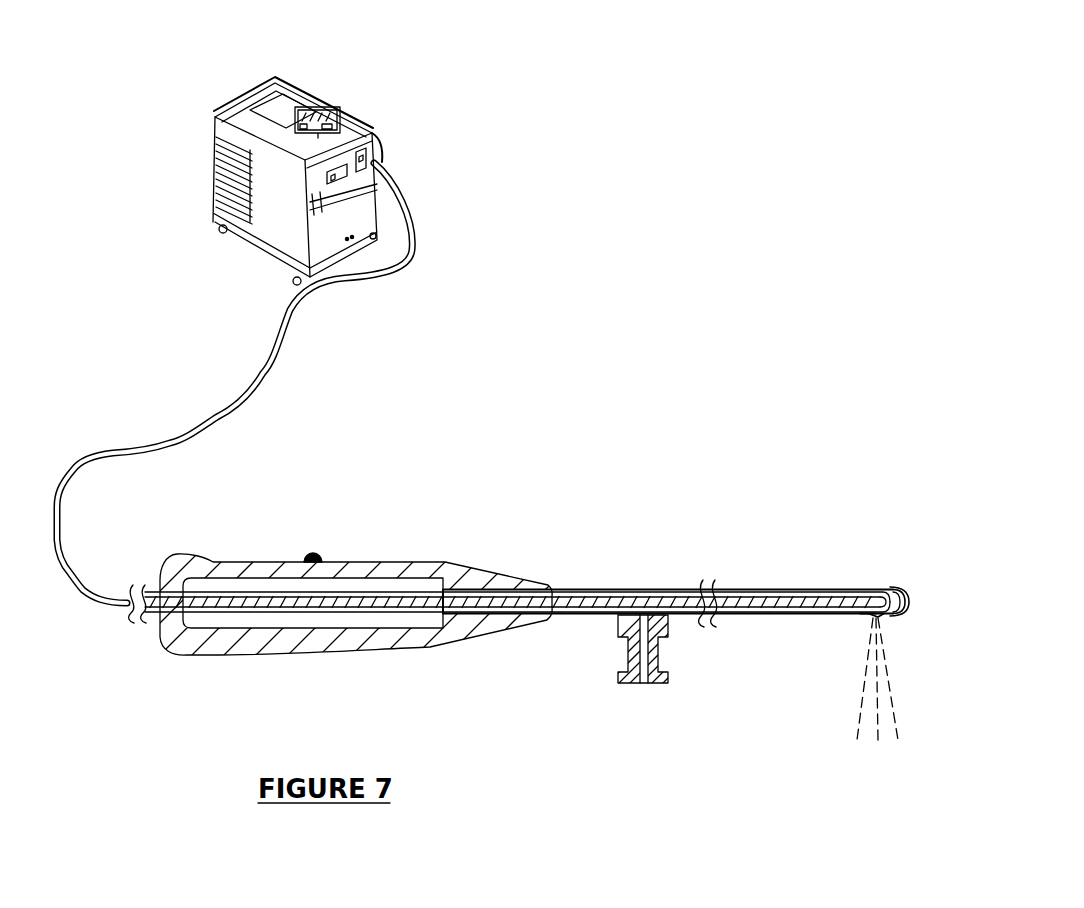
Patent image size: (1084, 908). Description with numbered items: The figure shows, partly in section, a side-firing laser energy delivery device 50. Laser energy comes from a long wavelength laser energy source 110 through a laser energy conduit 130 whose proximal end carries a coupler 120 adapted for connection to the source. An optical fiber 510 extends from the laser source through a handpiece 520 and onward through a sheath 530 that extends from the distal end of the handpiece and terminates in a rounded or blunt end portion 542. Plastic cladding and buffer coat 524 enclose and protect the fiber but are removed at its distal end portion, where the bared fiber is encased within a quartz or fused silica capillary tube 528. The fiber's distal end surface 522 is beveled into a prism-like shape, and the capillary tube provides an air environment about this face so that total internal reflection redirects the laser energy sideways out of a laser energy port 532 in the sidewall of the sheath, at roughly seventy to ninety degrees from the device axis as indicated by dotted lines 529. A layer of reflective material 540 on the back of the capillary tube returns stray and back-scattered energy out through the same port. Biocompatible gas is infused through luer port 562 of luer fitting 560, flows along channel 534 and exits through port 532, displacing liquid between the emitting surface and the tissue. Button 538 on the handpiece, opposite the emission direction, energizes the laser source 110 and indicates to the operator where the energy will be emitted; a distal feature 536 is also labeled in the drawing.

The device 50 is at (503, 586).
The laser energy source 110 is at (290, 100).
The coupler 120 is at (383, 150).
The laser energy conduit 130 is at (408, 245).
The optical fiber 510 is at (635, 600).
The handpiece 520 is at (202, 553).
The distal end surface 522 is at (900, 597).
The plastic cladding and buffer coat 524 is at (583, 597).
The capillary tube 528 is at (870, 597).
The dotted lines 529 is at (863, 684).
The sheath 530 is at (567, 590).
The laser energy port 532 is at (873, 618).
The channel 534 is at (665, 607).
The exit aperture 536 is at (882, 617).
The button 538 is at (316, 553).
The reflective material 540 is at (908, 597).
The rounded or blunt end portion 542 is at (915, 597).
The luer fitting 560 is at (636, 683).
The luer port 562 is at (644, 683).